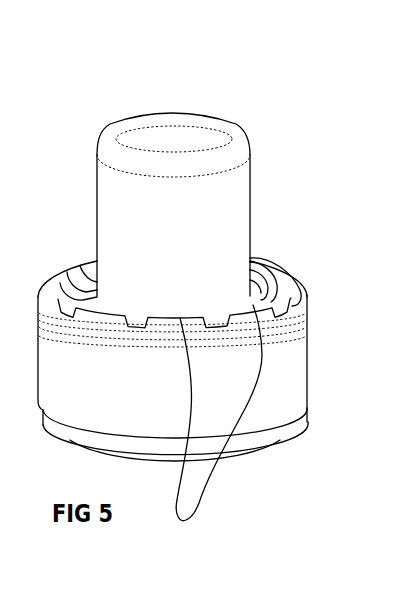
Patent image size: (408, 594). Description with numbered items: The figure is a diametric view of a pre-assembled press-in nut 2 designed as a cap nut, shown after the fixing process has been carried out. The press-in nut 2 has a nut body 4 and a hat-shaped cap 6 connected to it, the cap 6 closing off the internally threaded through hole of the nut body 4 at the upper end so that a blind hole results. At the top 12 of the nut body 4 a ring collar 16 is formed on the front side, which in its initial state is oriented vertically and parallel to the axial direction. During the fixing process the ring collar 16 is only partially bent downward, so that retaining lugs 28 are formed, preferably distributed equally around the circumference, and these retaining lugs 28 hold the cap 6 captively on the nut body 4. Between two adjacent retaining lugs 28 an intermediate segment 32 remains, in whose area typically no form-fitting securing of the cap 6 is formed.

The pre-assembled press-in nut 2 is at (285, 82).
The nut body 4 is at (294, 361).
The cap 6 is at (240, 232).
The top 12 is at (297, 288).
The ring collar 16 is at (80, 268).
The retaining lugs 28 is at (217, 534).
The intermediate segment 32 is at (245, 314).